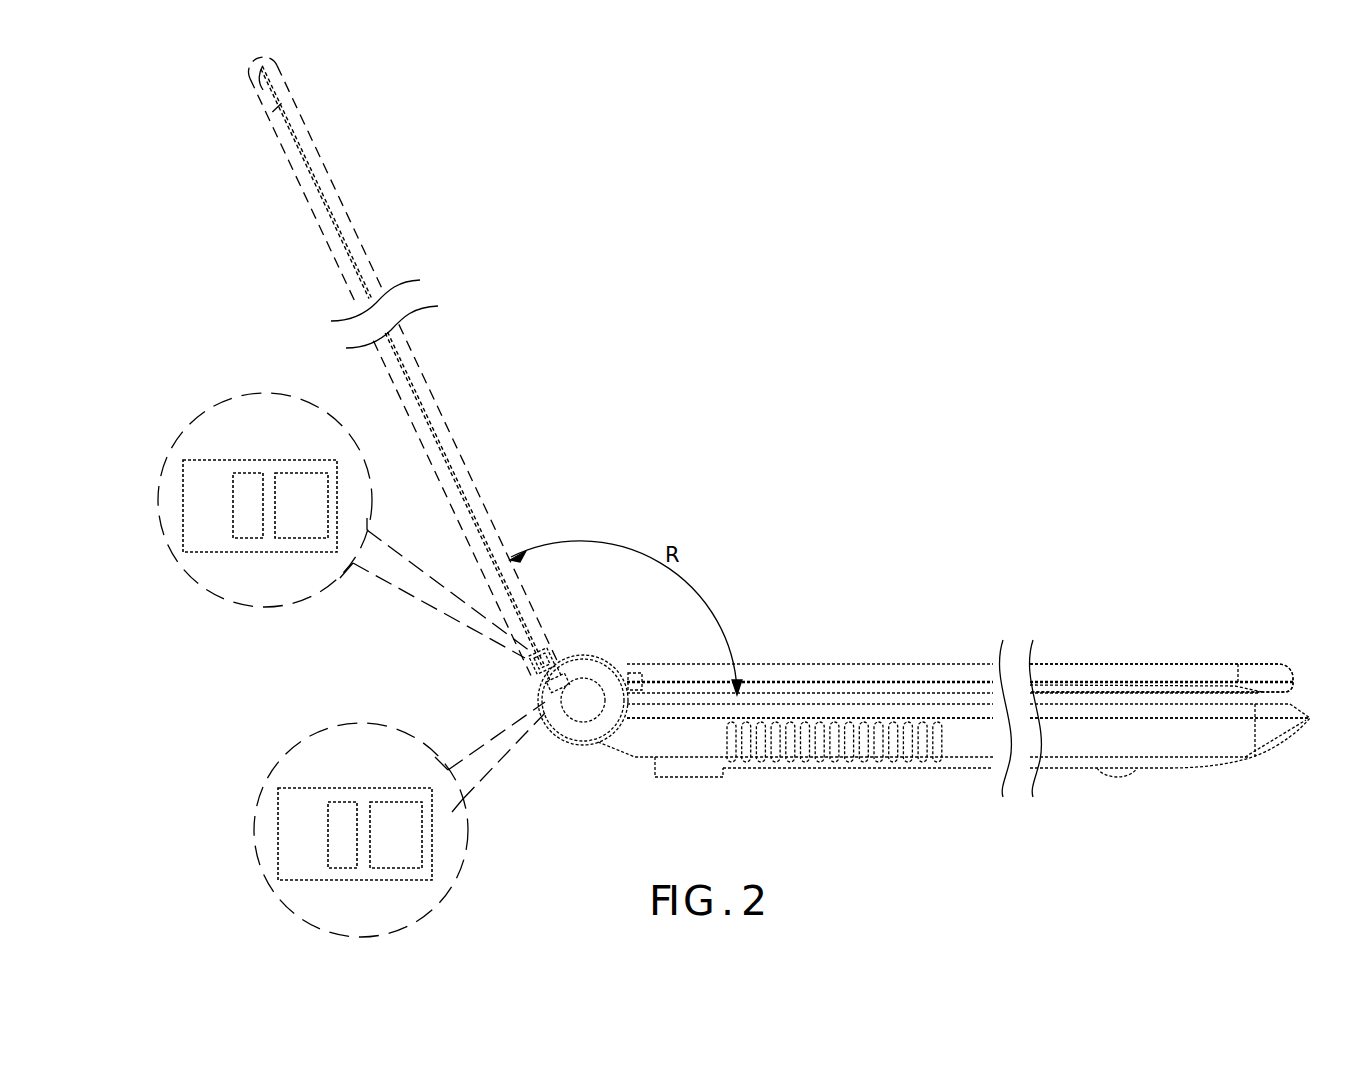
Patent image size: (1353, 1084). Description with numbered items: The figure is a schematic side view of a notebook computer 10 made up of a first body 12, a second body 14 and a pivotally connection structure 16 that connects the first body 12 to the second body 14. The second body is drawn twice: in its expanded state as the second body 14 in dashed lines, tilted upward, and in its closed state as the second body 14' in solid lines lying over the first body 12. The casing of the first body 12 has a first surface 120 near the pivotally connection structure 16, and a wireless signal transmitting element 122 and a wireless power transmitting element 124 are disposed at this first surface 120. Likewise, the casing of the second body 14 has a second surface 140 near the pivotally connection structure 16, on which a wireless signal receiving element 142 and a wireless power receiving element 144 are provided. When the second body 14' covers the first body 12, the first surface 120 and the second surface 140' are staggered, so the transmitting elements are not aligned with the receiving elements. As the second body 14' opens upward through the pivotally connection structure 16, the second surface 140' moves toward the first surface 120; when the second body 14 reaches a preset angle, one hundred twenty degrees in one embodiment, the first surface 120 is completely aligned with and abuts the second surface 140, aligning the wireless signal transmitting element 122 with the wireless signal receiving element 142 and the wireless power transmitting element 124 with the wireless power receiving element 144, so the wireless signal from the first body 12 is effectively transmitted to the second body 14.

The notebook computer 10 is at (684, 294).
The first body 12 is at (1168, 768).
The second body 14 is at (401, 364).
The second body in the closed state 14' is at (960, 652).
The pivotally connection structure 16 is at (581, 712).
The first surface 120 is at (546, 698).
The wireless signal transmitting element 122 is at (342, 802).
The wireless power transmitting element 124 is at (386, 802).
The second surface 140 is at (356, 513).
The second surface in the closed state 140' is at (628, 646).
The wireless signal receiving element 142 is at (245, 540).
The wireless power receiving element 144 is at (305, 540).